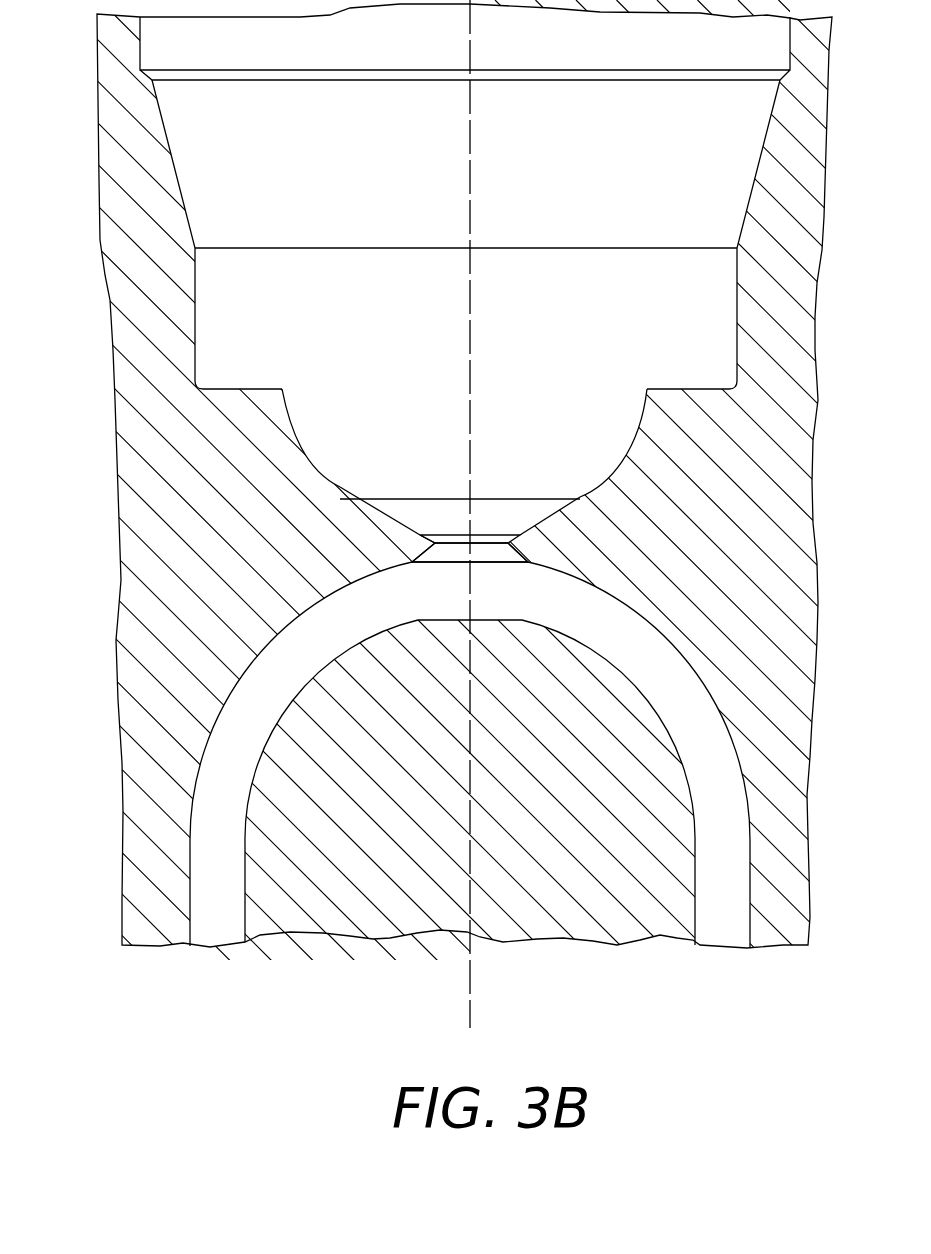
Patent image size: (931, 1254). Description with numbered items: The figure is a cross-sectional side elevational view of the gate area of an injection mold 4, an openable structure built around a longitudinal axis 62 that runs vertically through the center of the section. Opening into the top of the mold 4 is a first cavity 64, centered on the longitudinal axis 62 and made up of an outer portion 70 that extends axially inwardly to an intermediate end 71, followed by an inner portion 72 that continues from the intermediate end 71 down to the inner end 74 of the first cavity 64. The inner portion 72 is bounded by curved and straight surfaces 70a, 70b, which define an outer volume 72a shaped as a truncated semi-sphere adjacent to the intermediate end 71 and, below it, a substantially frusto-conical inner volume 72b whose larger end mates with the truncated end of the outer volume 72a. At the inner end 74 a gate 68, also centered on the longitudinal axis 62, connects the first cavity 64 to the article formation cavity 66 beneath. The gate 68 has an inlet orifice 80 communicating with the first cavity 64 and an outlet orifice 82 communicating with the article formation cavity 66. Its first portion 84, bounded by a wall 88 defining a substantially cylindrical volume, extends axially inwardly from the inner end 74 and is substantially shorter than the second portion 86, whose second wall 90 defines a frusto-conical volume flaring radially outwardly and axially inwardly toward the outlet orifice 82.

The mold 4 is at (86, 700).
The longitudinal axis 62 is at (476, 995).
The first cavity 64 is at (579, 186).
The article formation cavity 66 is at (668, 684).
The gate 68 is at (530, 550).
The outer portion 70 is at (207, 145).
The curved bowl surface 70a is at (623, 440).
The converging surface 70b is at (557, 503).
The intermediate end 71 is at (243, 389).
The inner portion 72 is at (380, 444).
The outer volume 72a is at (519, 436).
The inner frusto-conical volume 72b is at (514, 529).
The inner end 74 is at (430, 538).
The inlet orifice 80 is at (452, 534).
The outlet orifice 82 is at (427, 565).
The first portion 84 is at (462, 548).
The second portion 86 is at (492, 557).
The wall 88 is at (420, 538).
The second wall 90 is at (428, 546).